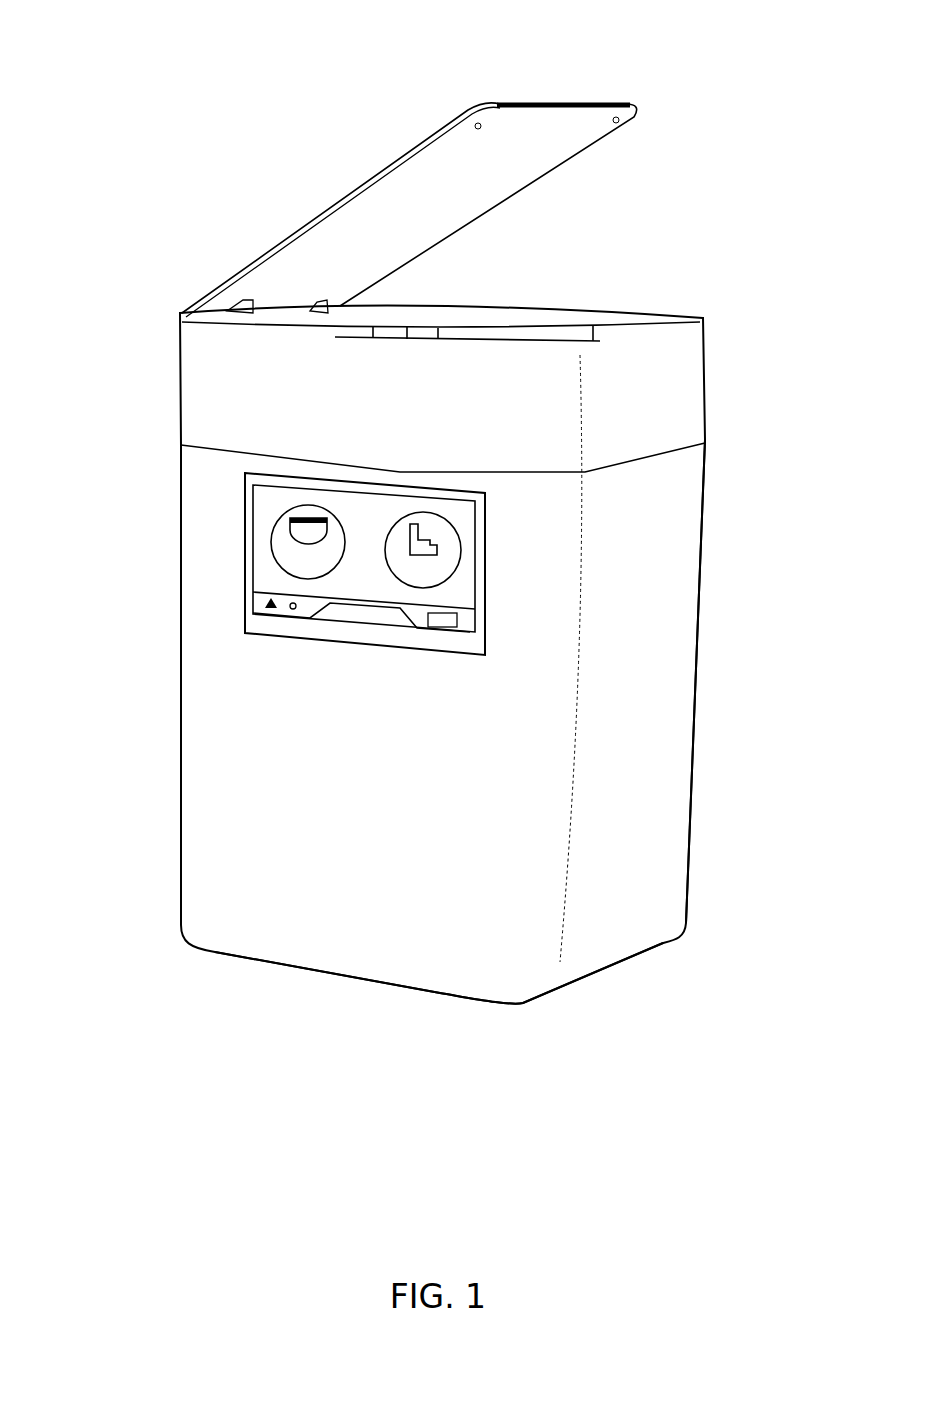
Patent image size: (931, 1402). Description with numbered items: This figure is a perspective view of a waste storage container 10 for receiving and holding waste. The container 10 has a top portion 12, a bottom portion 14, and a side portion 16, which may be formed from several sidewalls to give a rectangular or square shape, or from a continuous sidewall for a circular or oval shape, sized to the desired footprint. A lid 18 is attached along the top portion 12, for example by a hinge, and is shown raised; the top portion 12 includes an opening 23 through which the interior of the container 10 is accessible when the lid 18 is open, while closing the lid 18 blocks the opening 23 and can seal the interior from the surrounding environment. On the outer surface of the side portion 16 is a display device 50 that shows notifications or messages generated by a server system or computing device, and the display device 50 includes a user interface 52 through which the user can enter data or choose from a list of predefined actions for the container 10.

The waste storage container 10 is at (172, 130).
The top portion 12 is at (702, 316).
The bottom portion 14 is at (538, 1005).
The side portion 16 is at (677, 660).
The lid 18 is at (405, 188).
The opening 23 is at (574, 330).
The display device 50 is at (463, 583).
The user interface 52 is at (245, 602).